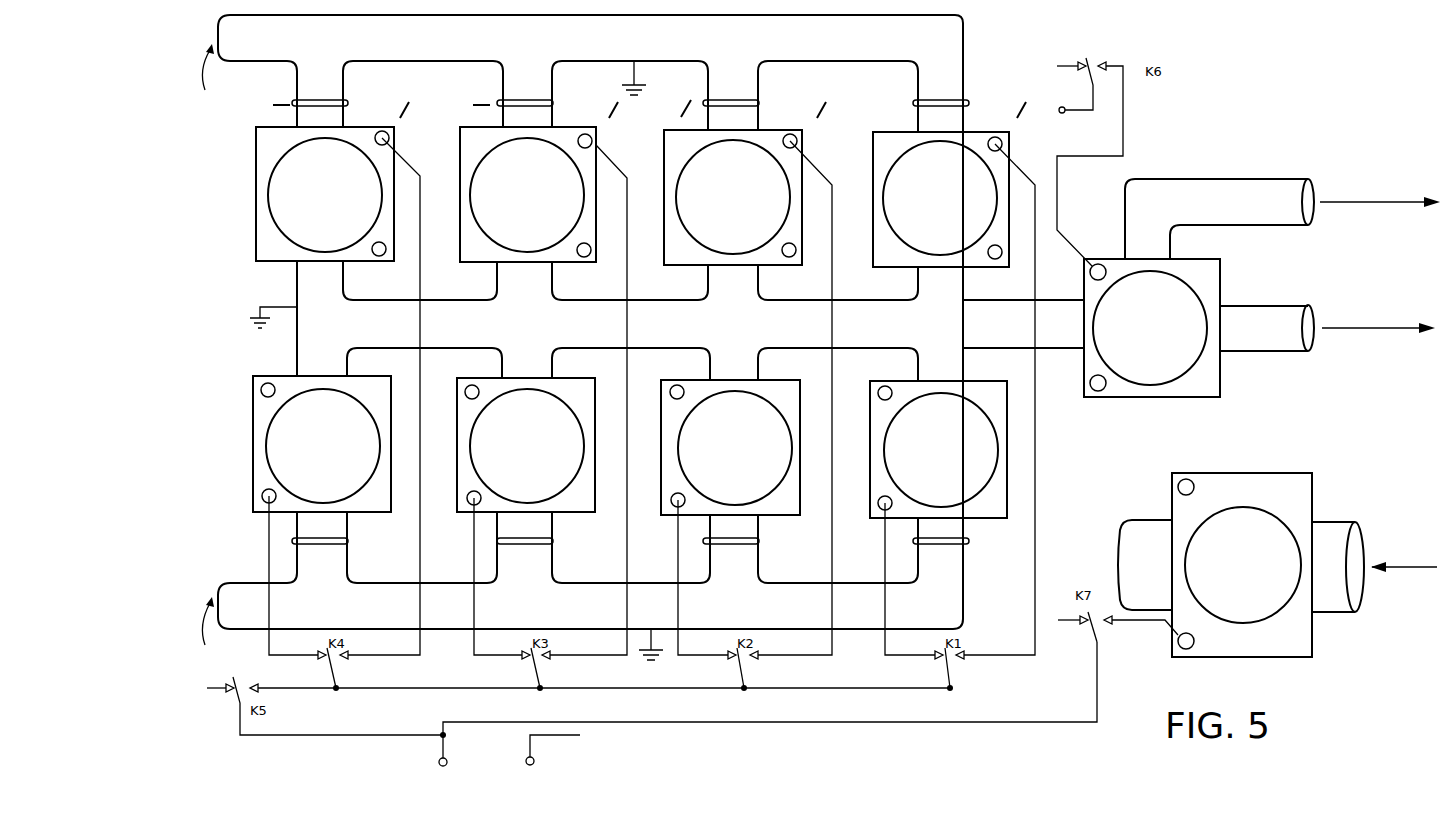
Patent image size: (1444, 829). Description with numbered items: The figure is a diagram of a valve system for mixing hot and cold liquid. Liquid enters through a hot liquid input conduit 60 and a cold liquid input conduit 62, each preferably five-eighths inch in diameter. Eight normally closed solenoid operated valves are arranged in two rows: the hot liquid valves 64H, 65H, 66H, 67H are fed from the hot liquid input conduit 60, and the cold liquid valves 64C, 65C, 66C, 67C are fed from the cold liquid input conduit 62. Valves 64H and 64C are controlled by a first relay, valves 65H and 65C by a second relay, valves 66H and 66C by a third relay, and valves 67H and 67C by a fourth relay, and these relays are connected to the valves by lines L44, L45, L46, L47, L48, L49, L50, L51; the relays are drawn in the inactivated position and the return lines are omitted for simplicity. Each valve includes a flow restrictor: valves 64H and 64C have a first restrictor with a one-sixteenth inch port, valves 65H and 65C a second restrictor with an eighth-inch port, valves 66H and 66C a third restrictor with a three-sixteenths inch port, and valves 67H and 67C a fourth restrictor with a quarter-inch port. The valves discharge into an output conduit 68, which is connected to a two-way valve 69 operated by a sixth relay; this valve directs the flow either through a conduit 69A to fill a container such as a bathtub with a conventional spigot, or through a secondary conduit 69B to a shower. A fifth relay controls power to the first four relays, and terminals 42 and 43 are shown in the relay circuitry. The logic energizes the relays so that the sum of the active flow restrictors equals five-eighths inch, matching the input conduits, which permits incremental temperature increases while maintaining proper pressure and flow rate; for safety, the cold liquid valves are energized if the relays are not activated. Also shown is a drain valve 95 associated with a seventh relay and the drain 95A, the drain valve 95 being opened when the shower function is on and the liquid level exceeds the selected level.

The hot liquid input conduit 60 is at (963, 50).
The cold liquid input conduit 62 is at (250, 556).
The output conduit 68 is at (464, 318).
The hot liquid solenoid valve 67H is at (285, 262).
The hot liquid solenoid valve 66H is at (460, 173).
The hot liquid solenoid valve 65H is at (665, 173).
The hot liquid solenoid valve 64H is at (873, 174).
The cold liquid solenoid valve 67C is at (253, 387).
The cold liquid solenoid valve 66C is at (457, 395).
The cold liquid solenoid valve 65C is at (661, 395).
The cold liquid solenoid valve 64C is at (870, 396).
The two-way valve 69 is at (1178, 400).
The conduit 69A is at (1284, 283).
The secondary conduit 69B is at (1258, 179).
The drain valve 95 is at (1298, 452).
The drain 95A is at (1336, 614).
The power supply terminal 42 is at (440, 761).
The power supply terminal 43 is at (535, 761).
The line L44 is at (1036, 512).
The line L45 is at (883, 582).
The line L46 is at (830, 580).
The line L47 is at (675, 580).
The line L48 is at (623, 568).
The line L49 is at (470, 568).
The line L50 is at (418, 563).
The line L51 is at (268, 540).